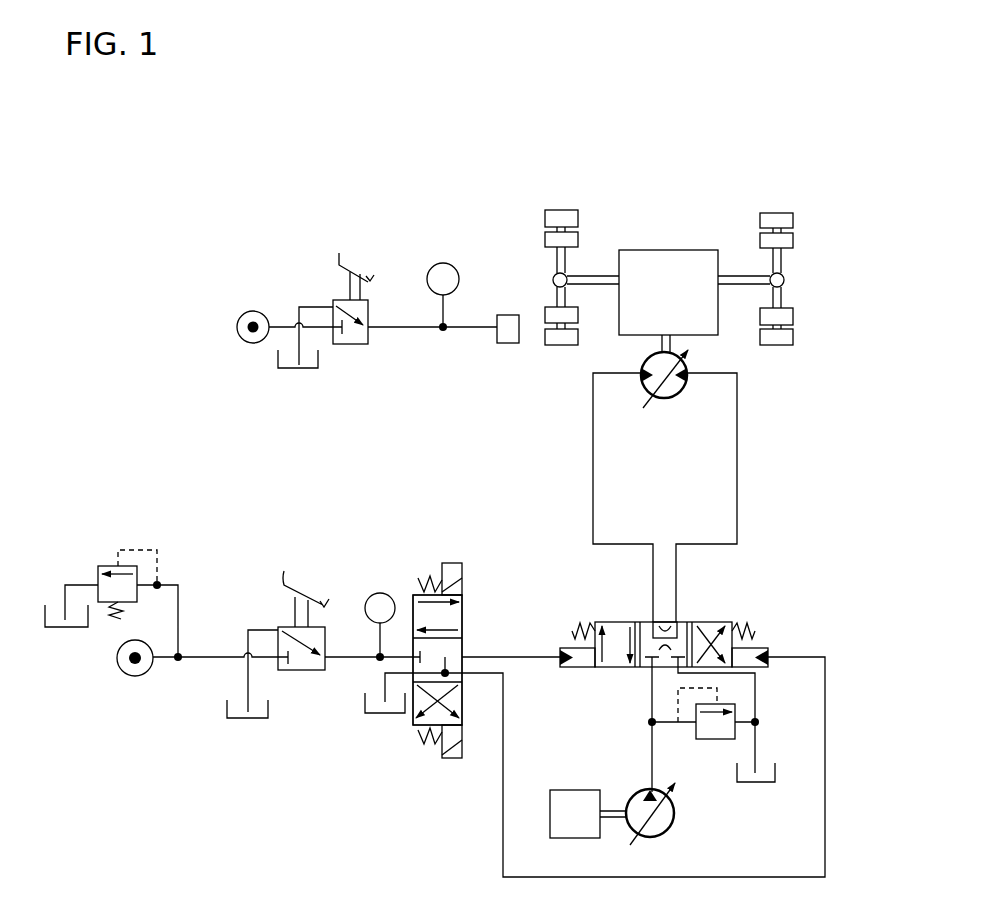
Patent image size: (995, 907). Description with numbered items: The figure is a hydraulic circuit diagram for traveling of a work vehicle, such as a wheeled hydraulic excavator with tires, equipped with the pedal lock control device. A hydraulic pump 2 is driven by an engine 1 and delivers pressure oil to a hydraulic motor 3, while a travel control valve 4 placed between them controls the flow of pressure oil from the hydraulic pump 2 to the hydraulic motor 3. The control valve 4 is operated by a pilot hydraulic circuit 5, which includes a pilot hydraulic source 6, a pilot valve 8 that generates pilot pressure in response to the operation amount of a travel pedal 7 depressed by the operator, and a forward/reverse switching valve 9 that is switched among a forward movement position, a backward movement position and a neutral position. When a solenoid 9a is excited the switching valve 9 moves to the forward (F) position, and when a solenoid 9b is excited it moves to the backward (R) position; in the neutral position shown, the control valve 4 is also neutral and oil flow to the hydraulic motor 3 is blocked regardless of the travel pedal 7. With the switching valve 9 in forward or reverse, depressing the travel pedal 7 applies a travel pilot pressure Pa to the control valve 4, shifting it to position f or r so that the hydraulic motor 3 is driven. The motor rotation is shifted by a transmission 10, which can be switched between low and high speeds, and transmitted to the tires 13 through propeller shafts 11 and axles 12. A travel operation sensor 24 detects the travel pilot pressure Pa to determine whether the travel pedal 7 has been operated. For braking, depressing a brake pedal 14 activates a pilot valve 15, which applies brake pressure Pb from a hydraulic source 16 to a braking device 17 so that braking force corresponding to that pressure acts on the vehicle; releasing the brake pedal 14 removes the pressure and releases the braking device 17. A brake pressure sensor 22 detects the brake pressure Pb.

The engine 1 is at (568, 790).
The hydraulic pump 2 is at (672, 820).
The hydraulic motor 3 is at (668, 400).
The travel control valve 4 is at (707, 622).
The pilot hydraulic circuit 5 is at (403, 506).
The pilot hydraulic source 6 is at (135, 677).
The travel pedal 7 is at (293, 585).
The pilot valve 8 is at (302, 672).
The forward/reverse switching valve 9 is at (462, 600).
The solenoid 9a is at (442, 567).
The solenoid 9b is at (448, 760).
The transmission 10 is at (672, 250).
The propeller shafts 11 is at (592, 270).
The axles 12 is at (552, 277).
The tires 13 is at (547, 210).
The brake pedal 14 is at (352, 265).
The pilot valve 15 is at (350, 345).
The hydraulic source 16 is at (242, 342).
The braking device 17 is at (506, 345).
The brake pressure sensor 22 is at (445, 263).
The travel operation sensor 24 is at (378, 593).